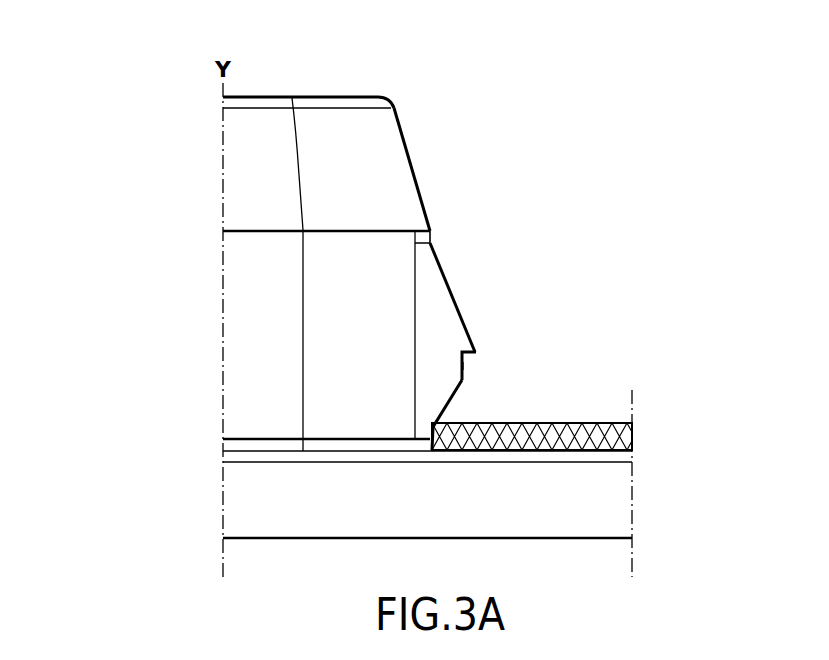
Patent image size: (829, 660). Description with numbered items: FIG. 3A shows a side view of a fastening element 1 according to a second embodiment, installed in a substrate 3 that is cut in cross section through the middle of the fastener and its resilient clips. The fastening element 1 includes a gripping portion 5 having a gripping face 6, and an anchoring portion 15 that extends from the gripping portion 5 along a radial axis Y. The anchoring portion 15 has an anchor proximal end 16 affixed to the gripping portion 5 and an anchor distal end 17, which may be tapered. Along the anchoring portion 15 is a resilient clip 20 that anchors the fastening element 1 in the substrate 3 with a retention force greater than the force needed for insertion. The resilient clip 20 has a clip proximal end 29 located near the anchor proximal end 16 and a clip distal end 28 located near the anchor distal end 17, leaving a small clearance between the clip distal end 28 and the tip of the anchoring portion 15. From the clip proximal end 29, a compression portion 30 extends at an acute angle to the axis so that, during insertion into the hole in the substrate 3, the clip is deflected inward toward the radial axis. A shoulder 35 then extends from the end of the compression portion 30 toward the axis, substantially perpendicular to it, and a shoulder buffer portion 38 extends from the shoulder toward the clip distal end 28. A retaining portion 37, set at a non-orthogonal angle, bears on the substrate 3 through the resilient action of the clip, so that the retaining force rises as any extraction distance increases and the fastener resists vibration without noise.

The fastening element 1 is at (527, 143).
The substrate 3 is at (577, 422).
The gripping portion 5 is at (530, 545).
The gripping face 6 is at (433, 540).
The anchoring portion 15 is at (413, 142).
The anchor proximal end 16 is at (420, 443).
The anchor distal end 17 is at (305, 80).
The resilient clip 20 is at (455, 342).
The clip distal end 28 is at (432, 243).
The clip proximal end 29 is at (427, 431).
The compression portion 30 is at (452, 283).
The shoulder 35 is at (478, 355).
The retaining portion 37 is at (457, 393).
The shoulder buffer portion 38 is at (464, 365).